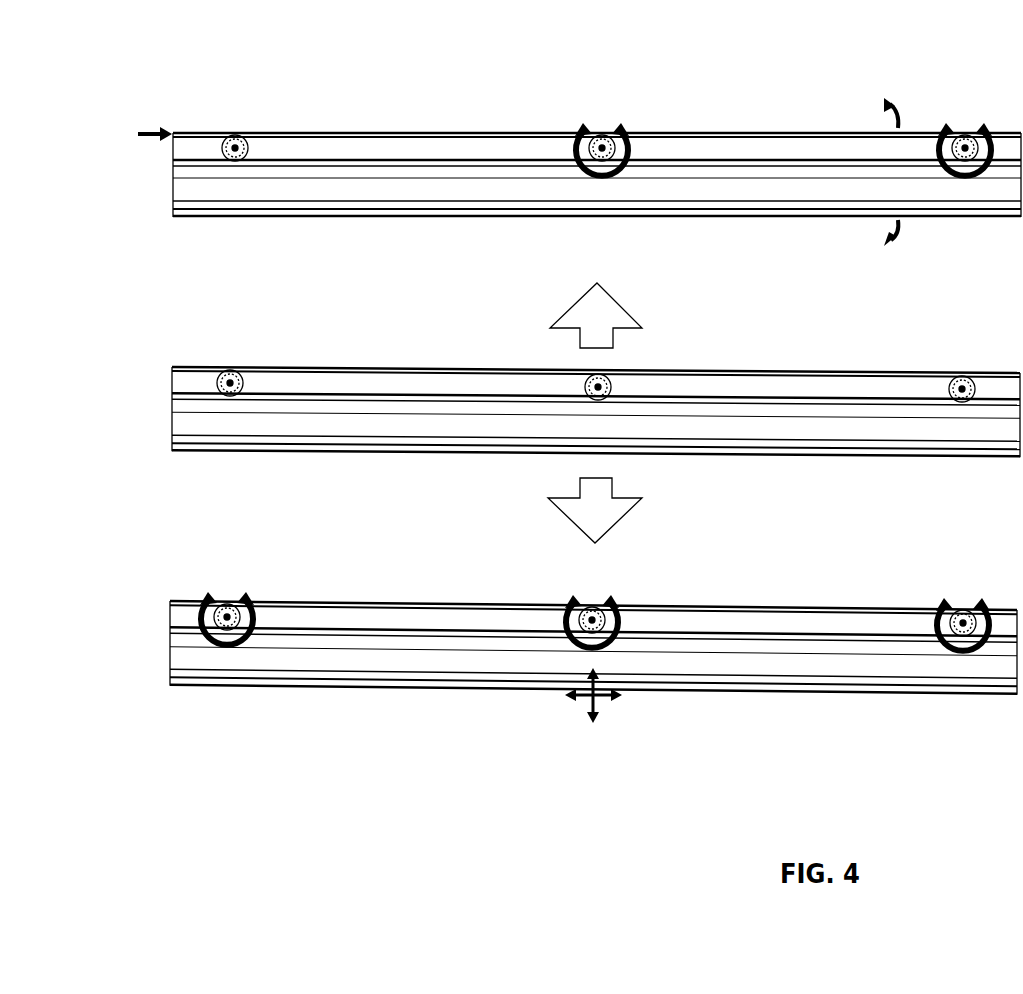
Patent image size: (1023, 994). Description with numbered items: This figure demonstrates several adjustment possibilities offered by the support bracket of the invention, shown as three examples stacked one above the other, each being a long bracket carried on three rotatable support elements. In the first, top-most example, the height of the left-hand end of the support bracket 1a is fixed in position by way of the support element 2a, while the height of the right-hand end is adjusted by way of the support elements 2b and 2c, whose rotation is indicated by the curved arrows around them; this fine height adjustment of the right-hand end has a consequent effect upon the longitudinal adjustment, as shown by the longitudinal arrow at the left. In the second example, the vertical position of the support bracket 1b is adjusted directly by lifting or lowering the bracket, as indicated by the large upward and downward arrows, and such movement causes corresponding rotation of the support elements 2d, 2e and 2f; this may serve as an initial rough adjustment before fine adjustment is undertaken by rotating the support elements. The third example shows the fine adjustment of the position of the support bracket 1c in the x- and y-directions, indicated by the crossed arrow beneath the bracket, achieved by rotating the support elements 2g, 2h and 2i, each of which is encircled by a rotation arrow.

The support bracket 1a is at (182, 172).
The support bracket 1b is at (182, 422).
The support bracket 1c is at (182, 642).
The support element 2a is at (238, 140).
The support element 2b is at (600, 142).
The support element 2c is at (963, 142).
The support element 2d is at (242, 373).
The support element 2e is at (590, 376).
The support element 2f is at (968, 378).
The support element 2g is at (228, 609).
The support element 2h is at (583, 618).
The support element 2i is at (963, 613).